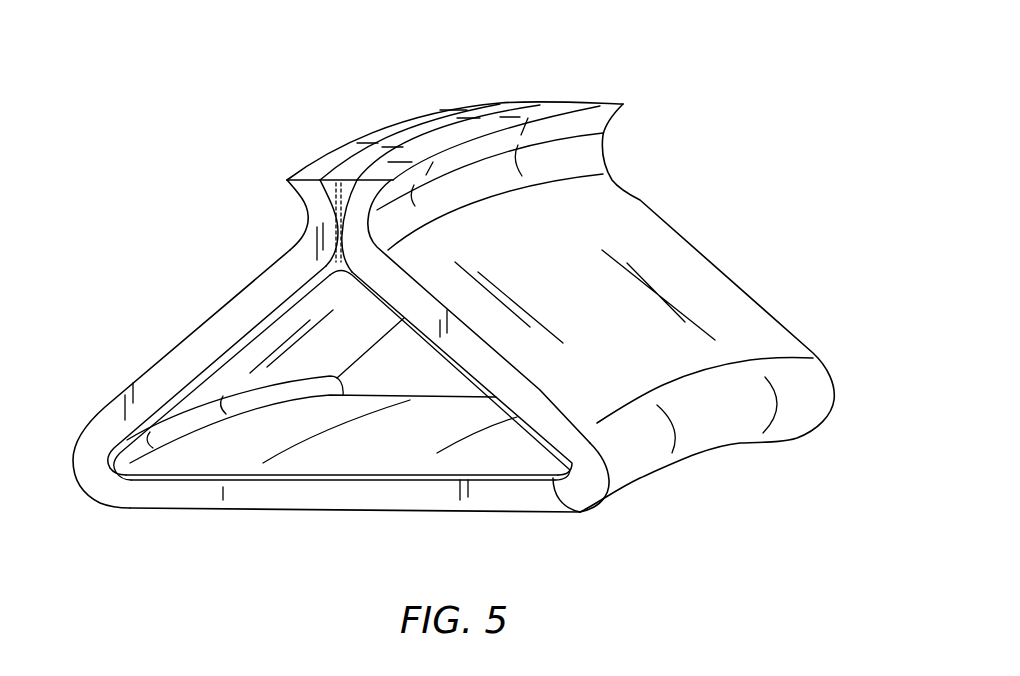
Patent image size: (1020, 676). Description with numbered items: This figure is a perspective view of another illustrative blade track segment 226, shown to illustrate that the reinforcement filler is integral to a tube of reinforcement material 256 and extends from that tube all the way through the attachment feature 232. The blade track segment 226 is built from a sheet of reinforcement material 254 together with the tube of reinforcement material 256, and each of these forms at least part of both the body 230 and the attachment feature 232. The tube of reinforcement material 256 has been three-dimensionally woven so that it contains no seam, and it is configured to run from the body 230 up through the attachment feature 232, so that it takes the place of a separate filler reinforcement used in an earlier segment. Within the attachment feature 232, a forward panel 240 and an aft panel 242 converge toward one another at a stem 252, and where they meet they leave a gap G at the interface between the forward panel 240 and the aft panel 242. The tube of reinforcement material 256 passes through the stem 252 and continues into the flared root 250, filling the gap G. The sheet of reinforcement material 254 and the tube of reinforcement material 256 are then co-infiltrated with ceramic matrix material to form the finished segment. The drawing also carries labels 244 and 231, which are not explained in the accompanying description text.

The blade track segment 226 is at (788, 64).
The attachment feature 232 is at (716, 126).
The body 230 is at (800, 258).
The aft panel 242 is at (593, 330).
The flared root 250 is at (275, 150).
The stem 252 is at (266, 219).
The gap G is at (316, 246).
The forward panel 240 is at (87, 306).
The base flange 244 is at (412, 534).
The inner filler 231 is at (247, 472).
The sheet of reinforcement material 254 is at (590, 463).
The tube of reinforcement material 256 is at (580, 512).